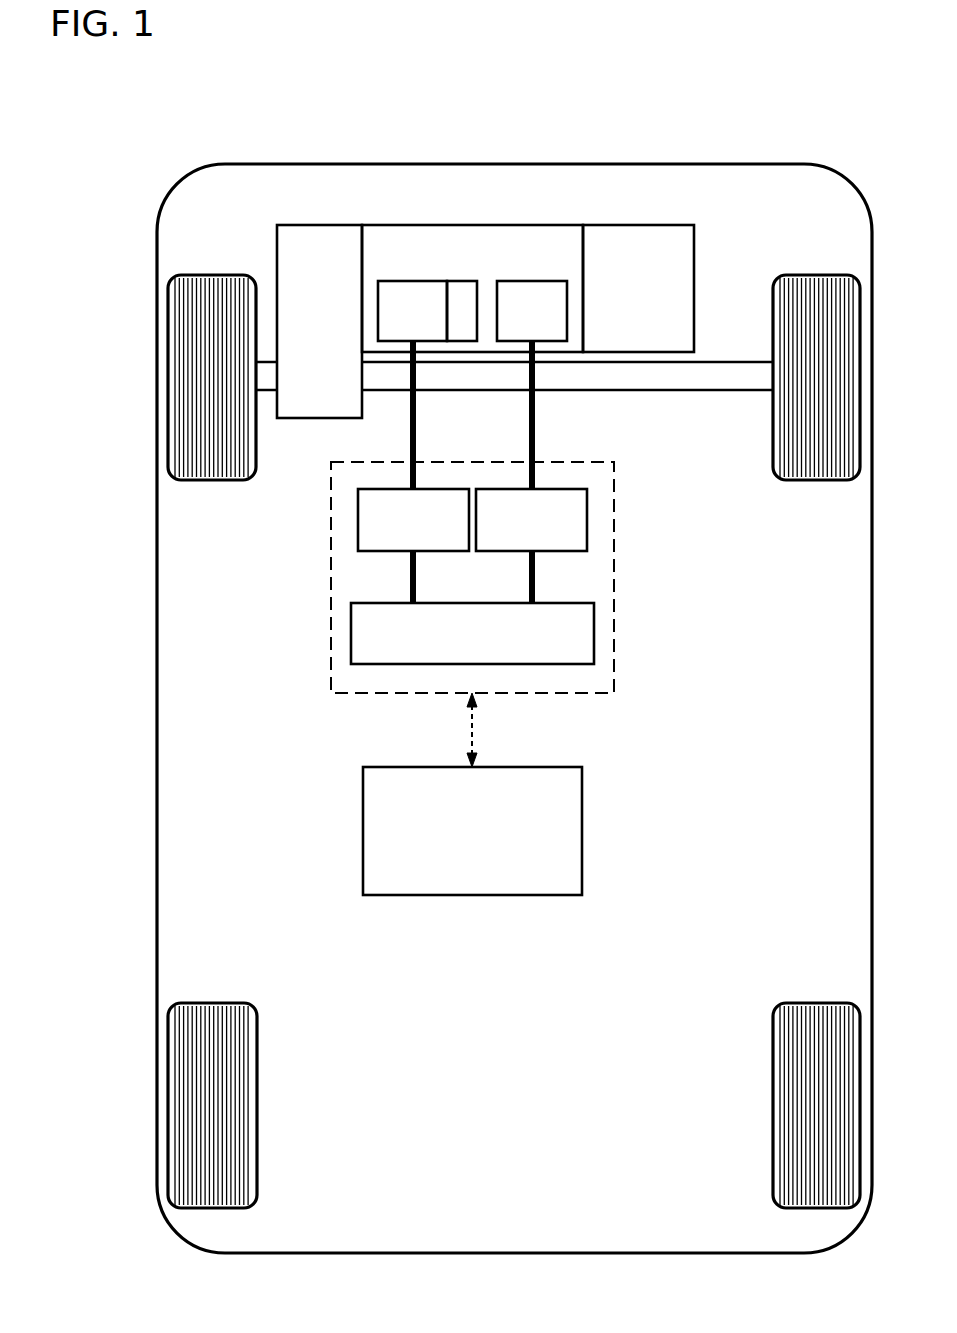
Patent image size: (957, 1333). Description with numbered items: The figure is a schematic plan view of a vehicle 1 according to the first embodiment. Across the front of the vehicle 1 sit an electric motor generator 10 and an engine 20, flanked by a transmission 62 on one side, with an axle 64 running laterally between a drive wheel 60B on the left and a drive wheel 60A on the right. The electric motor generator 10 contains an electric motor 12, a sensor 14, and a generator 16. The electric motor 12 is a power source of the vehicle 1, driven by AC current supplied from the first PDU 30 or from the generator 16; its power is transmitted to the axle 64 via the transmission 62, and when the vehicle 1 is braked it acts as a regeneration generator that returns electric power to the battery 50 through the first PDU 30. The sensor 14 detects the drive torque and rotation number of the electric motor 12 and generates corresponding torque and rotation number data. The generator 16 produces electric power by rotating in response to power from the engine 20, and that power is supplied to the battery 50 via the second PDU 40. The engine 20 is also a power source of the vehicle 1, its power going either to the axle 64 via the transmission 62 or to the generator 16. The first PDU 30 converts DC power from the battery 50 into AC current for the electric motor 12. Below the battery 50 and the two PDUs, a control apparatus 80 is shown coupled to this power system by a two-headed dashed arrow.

The vehicle 1 is at (97, 184).
The electric motor generator 10 is at (466, 225).
The electric motor 12 is at (378, 298).
The sensor 14 is at (462, 342).
The generator 16 is at (567, 298).
The engine 20 is at (620, 225).
The first PDU 30 is at (358, 520).
The second PDU 40 is at (587, 520).
The battery 50 is at (351, 633).
The drive wheel 60A is at (820, 275).
The drive wheel 60B is at (208, 275).
The transmission 62 is at (312, 225).
The axle 64 is at (718, 391).
The control apparatus 80 is at (582, 830).